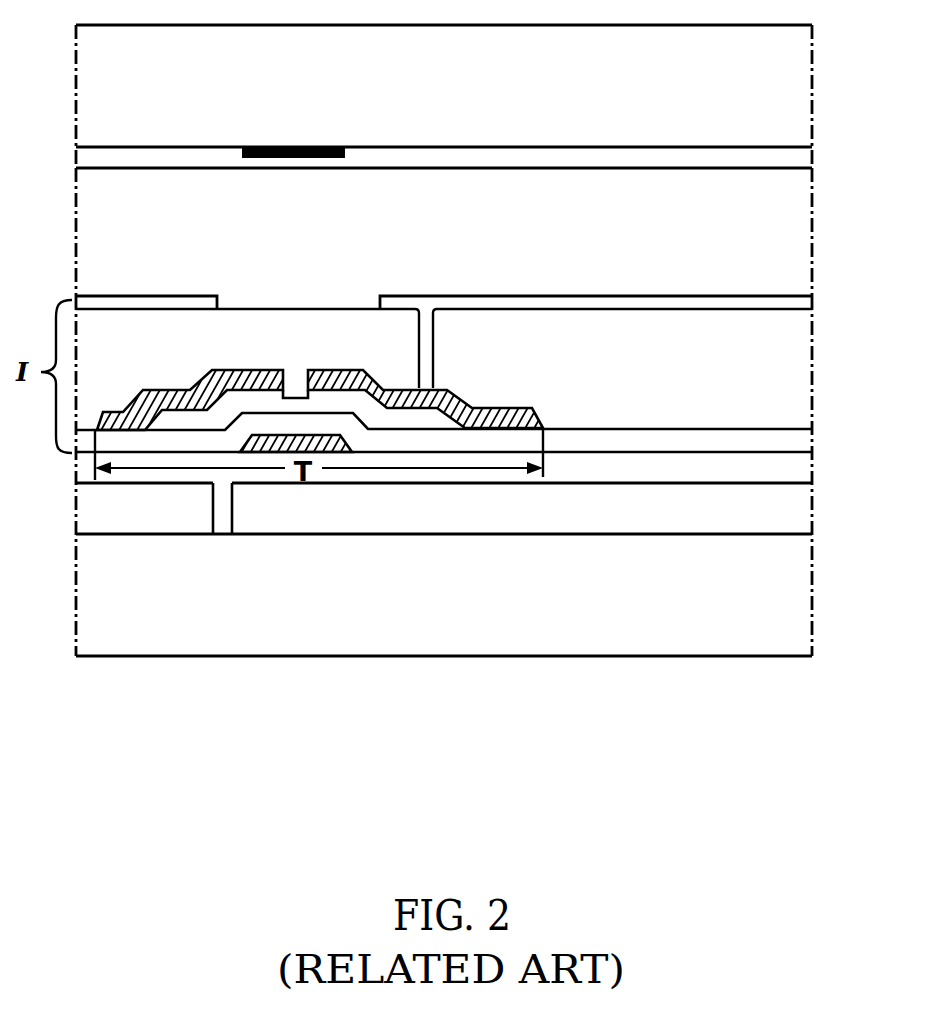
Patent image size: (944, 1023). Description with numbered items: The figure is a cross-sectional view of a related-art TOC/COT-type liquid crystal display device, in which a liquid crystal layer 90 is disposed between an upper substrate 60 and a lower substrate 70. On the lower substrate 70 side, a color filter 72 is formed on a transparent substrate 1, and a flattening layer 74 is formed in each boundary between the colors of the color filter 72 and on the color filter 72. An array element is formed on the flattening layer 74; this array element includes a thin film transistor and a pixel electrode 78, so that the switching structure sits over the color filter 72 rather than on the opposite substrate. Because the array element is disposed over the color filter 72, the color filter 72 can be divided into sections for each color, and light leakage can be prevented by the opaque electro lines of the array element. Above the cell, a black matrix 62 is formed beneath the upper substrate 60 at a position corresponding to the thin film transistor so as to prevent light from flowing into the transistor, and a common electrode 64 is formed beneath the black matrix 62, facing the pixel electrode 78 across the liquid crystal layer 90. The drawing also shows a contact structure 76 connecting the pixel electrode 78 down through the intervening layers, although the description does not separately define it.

The transparent substrate 1 is at (461, 98).
The upper substrate 60 is at (822, 25).
The black matrix 62 is at (291, 158).
The common electrode 64 is at (500, 165).
The lower substrate 70 is at (822, 298).
The color filter 72 is at (123, 532).
The flattening layer 74 is at (222, 522).
The contact hole / overcoat layer 76 is at (207, 318).
The pixel electrode 78 is at (135, 303).
The liquid crystal layer 90 is at (822, 168).